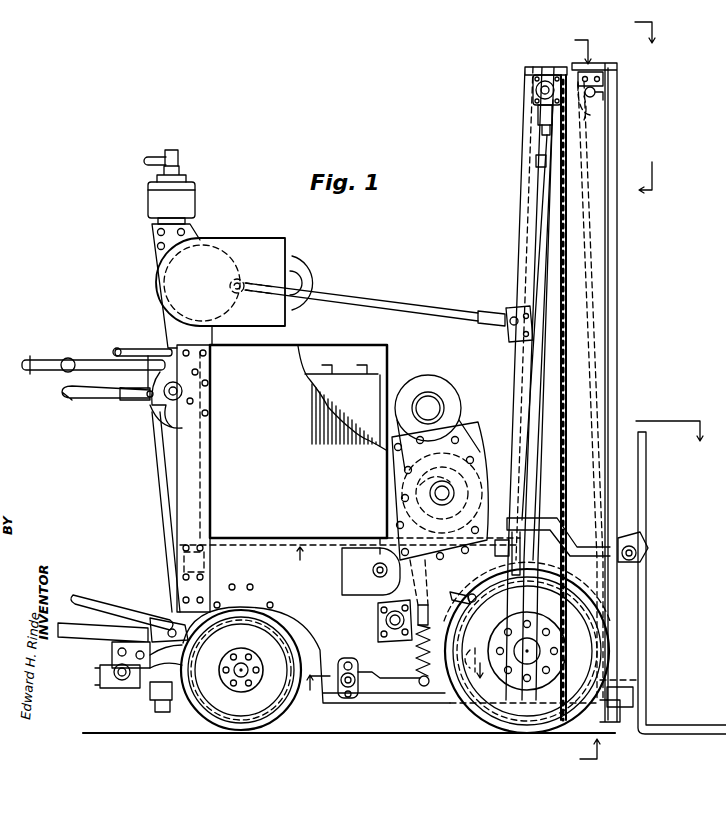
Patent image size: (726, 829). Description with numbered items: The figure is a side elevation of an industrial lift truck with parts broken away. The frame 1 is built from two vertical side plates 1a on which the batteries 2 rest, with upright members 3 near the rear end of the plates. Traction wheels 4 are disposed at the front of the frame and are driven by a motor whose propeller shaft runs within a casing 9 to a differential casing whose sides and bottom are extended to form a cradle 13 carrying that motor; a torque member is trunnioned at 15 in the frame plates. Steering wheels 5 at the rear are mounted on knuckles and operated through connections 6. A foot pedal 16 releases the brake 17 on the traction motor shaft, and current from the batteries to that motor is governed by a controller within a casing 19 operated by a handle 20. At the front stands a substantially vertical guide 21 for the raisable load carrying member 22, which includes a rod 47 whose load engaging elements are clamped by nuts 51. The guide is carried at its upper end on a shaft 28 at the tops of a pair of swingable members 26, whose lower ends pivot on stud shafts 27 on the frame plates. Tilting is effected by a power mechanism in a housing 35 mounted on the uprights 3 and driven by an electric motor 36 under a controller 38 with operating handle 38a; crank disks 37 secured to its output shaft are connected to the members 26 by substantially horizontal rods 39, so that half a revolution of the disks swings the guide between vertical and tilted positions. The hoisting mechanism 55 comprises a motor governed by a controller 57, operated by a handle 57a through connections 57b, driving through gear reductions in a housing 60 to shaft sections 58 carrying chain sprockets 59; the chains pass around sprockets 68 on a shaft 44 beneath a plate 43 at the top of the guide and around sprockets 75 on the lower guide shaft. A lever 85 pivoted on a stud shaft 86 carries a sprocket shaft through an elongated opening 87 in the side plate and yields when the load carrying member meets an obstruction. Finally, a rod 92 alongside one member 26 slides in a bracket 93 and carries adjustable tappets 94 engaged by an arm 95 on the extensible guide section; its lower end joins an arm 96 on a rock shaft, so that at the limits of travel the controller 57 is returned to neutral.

The frame 1 is at (395, 524).
The vertical side plates 1a is at (631, 106).
The batteries 2 is at (312, 398).
The upright members 3 is at (180, 448).
The traction wheels 4 is at (480, 712).
The steering wheels 5 is at (200, 714).
The connections 6 is at (155, 488).
The casing 9 is at (579, 400).
The cradle 13 is at (479, 647).
The trunnions 15 is at (115, 632).
The foot pedal 16 is at (115, 596).
The brake 17 is at (93, 357).
The casing 19 is at (160, 406).
The handle 20 is at (80, 398).
The guide 21 is at (598, 392).
The load carrying member 22 is at (682, 583).
The swingable members 26 is at (522, 242).
The stud shafts 27 is at (528, 568).
The shaft 28 is at (535, 90).
The housing 35 is at (157, 247).
The electric motor 36 is at (322, 274).
The crank disks 37 is at (213, 248).
The controller 38 is at (148, 192).
The operating handle 38a is at (168, 152).
The rods 39 is at (388, 308).
The plate 43 is at (596, 68).
The shaft 44 is at (603, 96).
The rod 47 is at (638, 553).
The nuts 51 is at (648, 542).
The hoisting mechanism 55 is at (466, 458).
The controller 57 is at (371, 571).
The handle 57a is at (143, 348).
The connections 57b is at (298, 545).
The shaft sections 58 is at (484, 492).
The chain sprockets 59 is at (430, 497).
The housing 60 is at (418, 480).
The sprockets 68 is at (588, 109).
The sprockets 75 is at (636, 680).
The lever 85 is at (398, 690).
The stud shaft 86 is at (360, 668).
The elongated opening 87 is at (460, 600).
The rod 92 is at (545, 180).
The bracket 93 is at (530, 112).
The adjustable tappets 94 is at (536, 168).
The arm 95 is at (538, 522).
The arm 96 is at (495, 546).